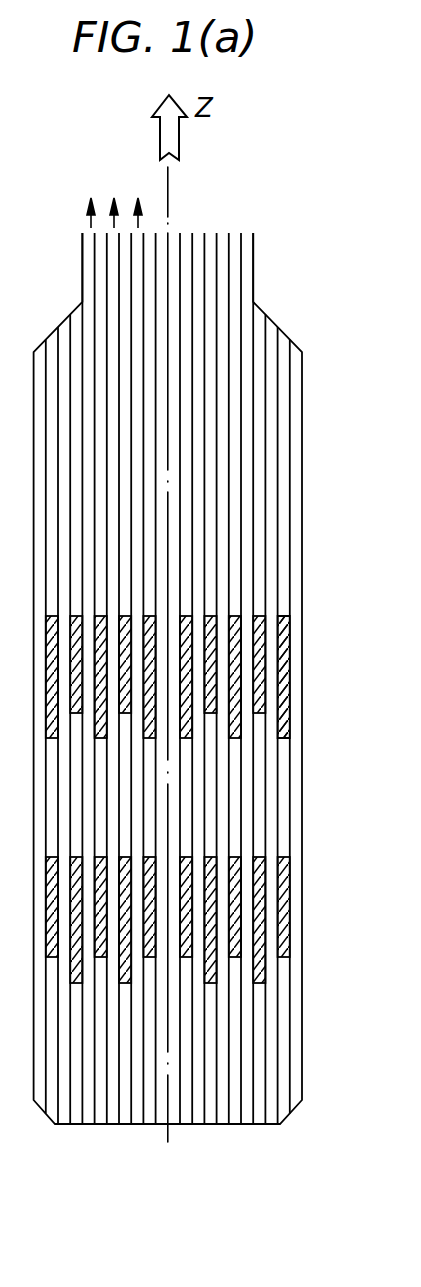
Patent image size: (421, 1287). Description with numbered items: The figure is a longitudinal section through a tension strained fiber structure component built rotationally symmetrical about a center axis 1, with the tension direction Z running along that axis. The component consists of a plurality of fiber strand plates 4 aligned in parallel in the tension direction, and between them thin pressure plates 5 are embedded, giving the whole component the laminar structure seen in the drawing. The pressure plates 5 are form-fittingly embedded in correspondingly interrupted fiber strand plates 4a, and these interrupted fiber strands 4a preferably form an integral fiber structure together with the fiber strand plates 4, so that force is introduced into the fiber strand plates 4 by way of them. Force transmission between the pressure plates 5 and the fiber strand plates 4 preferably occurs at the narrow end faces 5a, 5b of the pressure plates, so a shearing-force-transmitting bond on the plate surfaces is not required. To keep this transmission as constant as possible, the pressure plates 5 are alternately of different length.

The center axis 1 is at (170, 188).
The fiber strand plates 4 is at (270, 778).
The interrupted fiber strand plates 4a is at (283, 968).
The pressure plates 5 is at (257, 658).
The narrow end face 5a is at (284, 616).
The narrow end face 5b is at (288, 731).